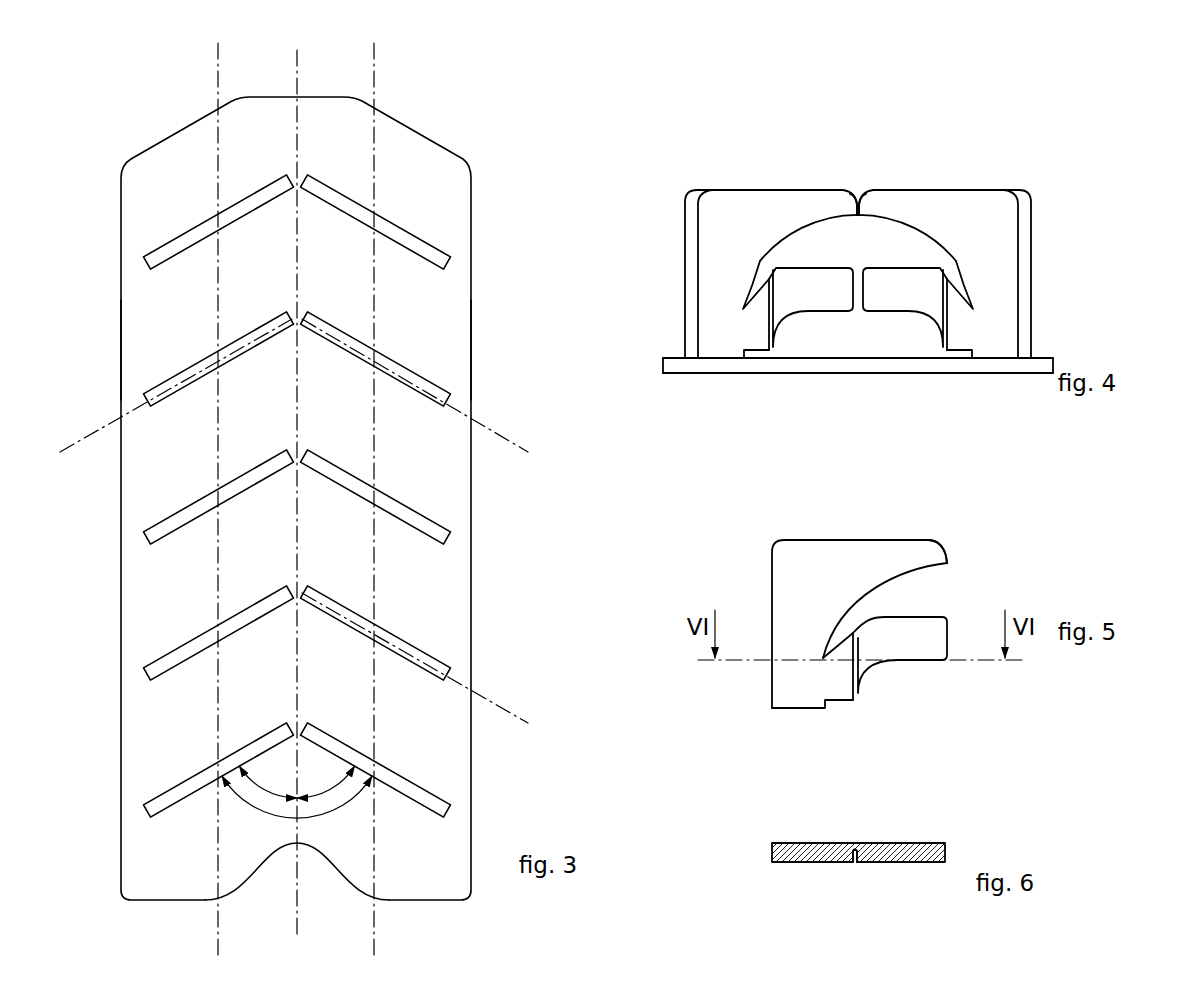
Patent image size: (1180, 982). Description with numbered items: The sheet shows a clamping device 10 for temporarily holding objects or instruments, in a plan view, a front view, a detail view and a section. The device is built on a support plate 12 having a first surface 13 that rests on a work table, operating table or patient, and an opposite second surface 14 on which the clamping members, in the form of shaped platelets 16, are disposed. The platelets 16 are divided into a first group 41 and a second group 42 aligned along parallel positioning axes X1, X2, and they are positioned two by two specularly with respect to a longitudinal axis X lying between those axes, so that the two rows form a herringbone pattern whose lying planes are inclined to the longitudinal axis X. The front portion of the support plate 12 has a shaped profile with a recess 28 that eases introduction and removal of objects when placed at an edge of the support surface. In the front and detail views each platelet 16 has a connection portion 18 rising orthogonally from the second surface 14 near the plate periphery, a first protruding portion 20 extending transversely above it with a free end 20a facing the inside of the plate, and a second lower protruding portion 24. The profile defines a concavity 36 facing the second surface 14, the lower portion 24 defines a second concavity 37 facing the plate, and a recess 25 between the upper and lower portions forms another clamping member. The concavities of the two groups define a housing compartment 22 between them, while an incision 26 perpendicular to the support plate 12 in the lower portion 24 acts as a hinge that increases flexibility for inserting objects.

In FIG. 3, the clamping device 10 is at (466, 129).
In FIG. 4, the clamping device 10 is at (1028, 166).
In FIG. 3, the support plate 12 is at (120, 352).
In FIG. 4, the support plate 12 is at (661, 364).
In FIG. 4, the first surface 13 is at (683, 373).
In FIG. 3, the second surface 14 is at (447, 332).
In FIG. 4, the second surface 14 is at (673, 357).
In FIG. 3, the shaped platelets 16 is at (406, 388).
In FIG. 4, the shaped platelets 16 is at (731, 188).
In FIG. 5, the shaped platelets 16 is at (770, 560).
In FIG. 6, the shaped platelets 16 is at (947, 852).
In FIG. 4, the connection portion 18 is at (725, 340).
In FIG. 5, the connection portion 18 is at (788, 683).
In FIG. 6, the connection portion 18 is at (805, 853).
In FIG. 4, the first protruding portion 20 is at (793, 207).
In FIG. 5, the first protruding portion 20 is at (907, 555).
In FIG. 4, the free end 20a is at (869, 213).
In FIG. 5, the free end 20a is at (942, 562).
In FIG. 4, the housing compartment 22 is at (745, 355).
In FIG. 4, the second lower protruding portion 24 is at (840, 295).
In FIG. 5, the second lower protruding portion 24 is at (937, 627).
In FIG. 6, the second lower protruding portion 24 is at (880, 853).
In FIG. 4, the recess 25 is at (752, 292).
In FIG. 5, the recess 25 is at (828, 632).
In FIG. 4, the incision 26 is at (771, 308).
In FIG. 5, the incision 26 is at (853, 677).
In FIG. 6, the incision 26 is at (855, 852).
In FIG. 3, the recess 28 is at (318, 862).
In FIG. 4, the concavity 36 is at (795, 236).
In FIG. 5, the concavity 36 is at (890, 578).
In FIG. 4, the second concavity 37 is at (810, 316).
In FIG. 5, the second concavity 37 is at (901, 664).
In FIG. 3, the first group 41 is at (178, 223).
In FIG. 3, the second group 42 is at (402, 215).
In FIG. 3, the longitudinal axis X is at (297, 79).
In FIG. 3, the positioning axis X1 is at (218, 83).
In FIG. 3, the positioning axis X2 is at (374, 85).